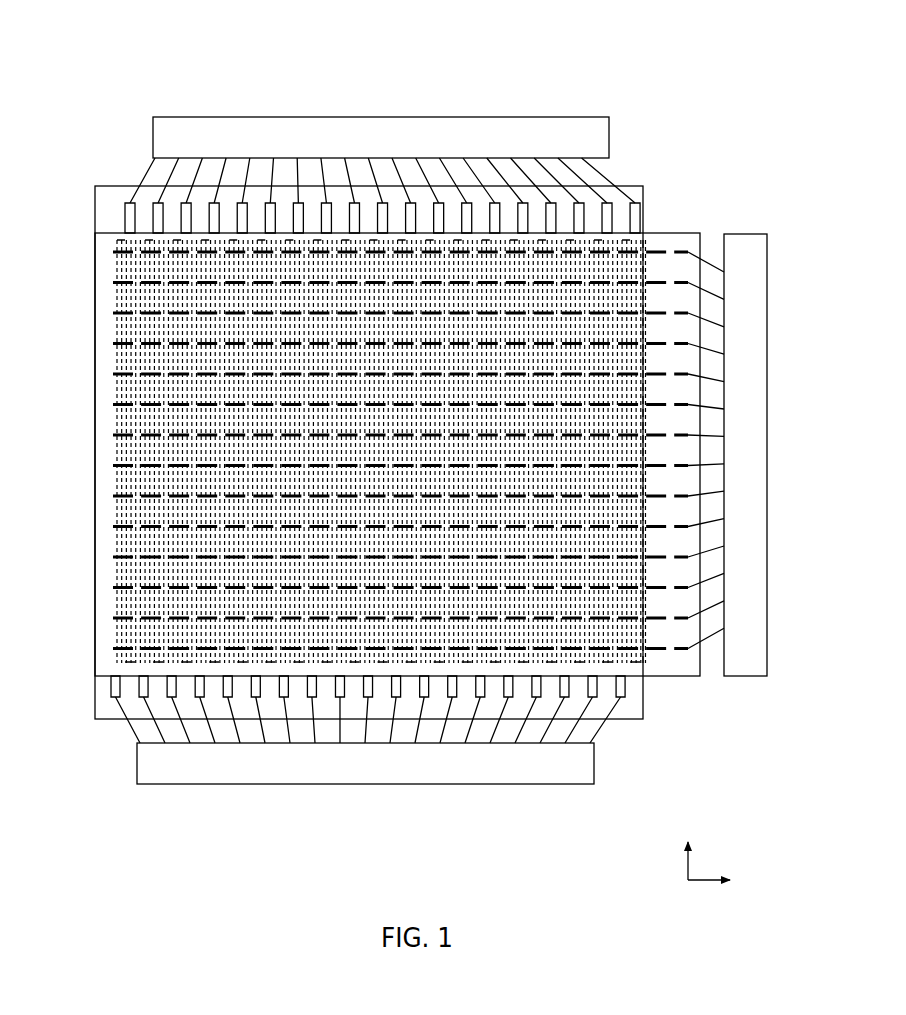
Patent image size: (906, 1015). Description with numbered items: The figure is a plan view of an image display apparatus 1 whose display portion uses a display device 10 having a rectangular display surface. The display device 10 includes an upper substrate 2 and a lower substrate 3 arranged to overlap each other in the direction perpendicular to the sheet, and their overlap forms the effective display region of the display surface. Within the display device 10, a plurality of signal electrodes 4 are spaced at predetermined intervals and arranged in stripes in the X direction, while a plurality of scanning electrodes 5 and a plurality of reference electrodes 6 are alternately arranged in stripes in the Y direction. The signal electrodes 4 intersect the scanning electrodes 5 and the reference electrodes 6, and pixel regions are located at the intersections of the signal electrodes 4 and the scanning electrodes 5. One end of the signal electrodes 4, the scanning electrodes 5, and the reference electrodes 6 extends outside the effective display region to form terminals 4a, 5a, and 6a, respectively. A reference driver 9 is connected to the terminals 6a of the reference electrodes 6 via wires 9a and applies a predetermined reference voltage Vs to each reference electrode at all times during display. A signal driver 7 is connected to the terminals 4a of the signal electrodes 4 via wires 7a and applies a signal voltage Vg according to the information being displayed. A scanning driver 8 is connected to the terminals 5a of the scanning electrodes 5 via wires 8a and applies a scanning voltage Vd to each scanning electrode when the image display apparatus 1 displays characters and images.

The image display apparatus 1 is at (131, 62).
The upper substrate 2 is at (695, 242).
The lower substrate 3 is at (100, 706).
The signal electrodes 4 is at (126, 658).
The terminals of the signal electrodes 4a is at (640, 660).
The scanning electrodes 5 is at (113, 265).
The terminals of the scanning electrodes 5a is at (622, 698).
The reference electrodes 6 is at (645, 672).
The terminals of the reference electrodes 6a is at (117, 218).
The signal driver 7 is at (746, 234).
The wires 7a is at (712, 640).
The scanning driver 8 is at (515, 785).
The wires 8a is at (130, 728).
The reference driver 9 is at (550, 117).
The wires 9a is at (156, 183).
The display device 10 is at (640, 186).